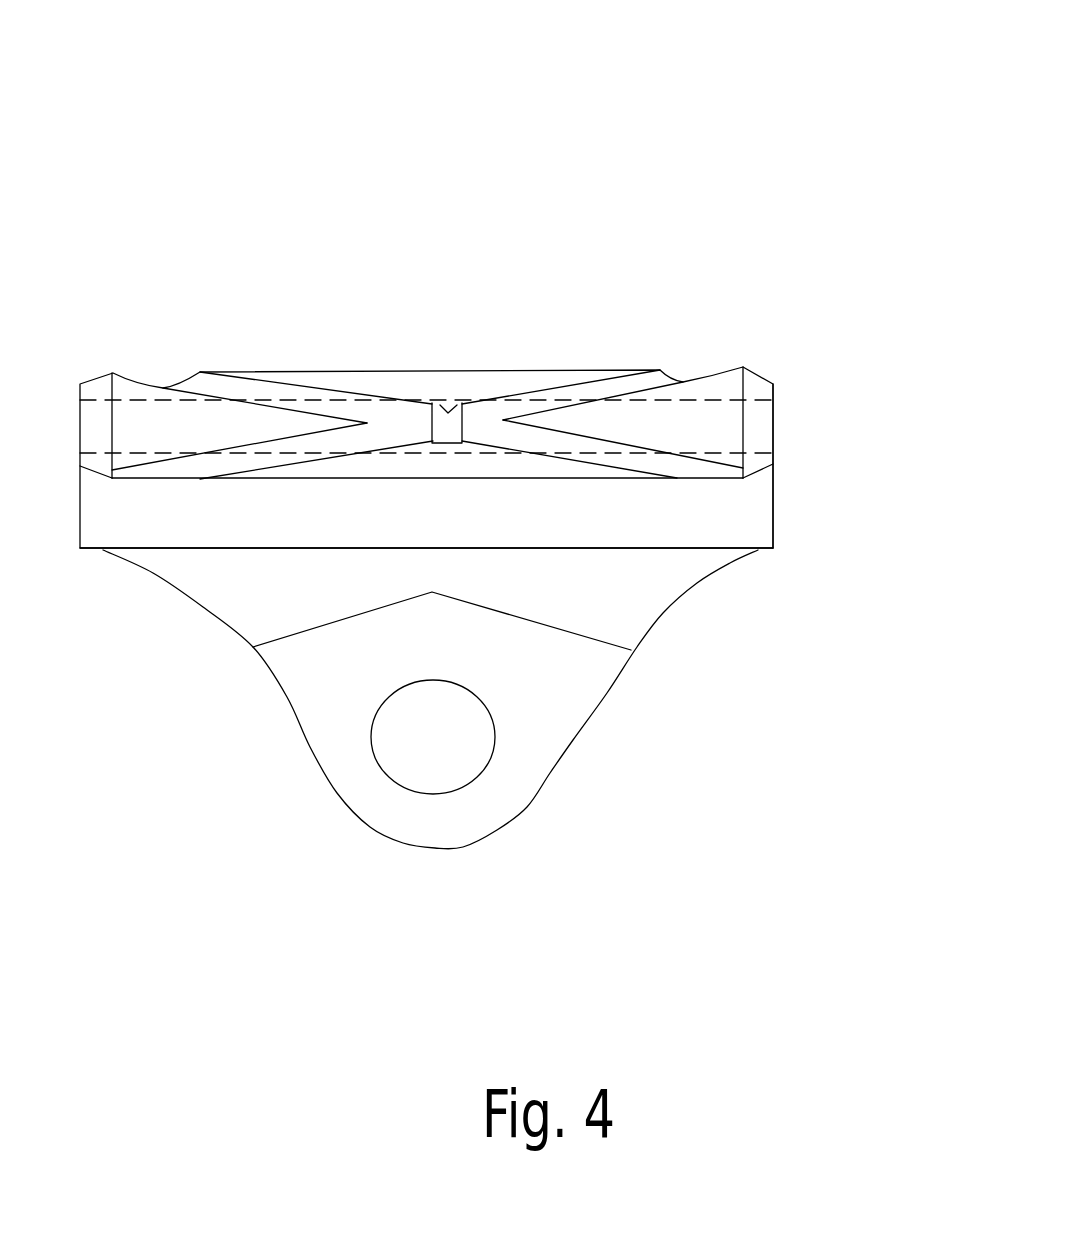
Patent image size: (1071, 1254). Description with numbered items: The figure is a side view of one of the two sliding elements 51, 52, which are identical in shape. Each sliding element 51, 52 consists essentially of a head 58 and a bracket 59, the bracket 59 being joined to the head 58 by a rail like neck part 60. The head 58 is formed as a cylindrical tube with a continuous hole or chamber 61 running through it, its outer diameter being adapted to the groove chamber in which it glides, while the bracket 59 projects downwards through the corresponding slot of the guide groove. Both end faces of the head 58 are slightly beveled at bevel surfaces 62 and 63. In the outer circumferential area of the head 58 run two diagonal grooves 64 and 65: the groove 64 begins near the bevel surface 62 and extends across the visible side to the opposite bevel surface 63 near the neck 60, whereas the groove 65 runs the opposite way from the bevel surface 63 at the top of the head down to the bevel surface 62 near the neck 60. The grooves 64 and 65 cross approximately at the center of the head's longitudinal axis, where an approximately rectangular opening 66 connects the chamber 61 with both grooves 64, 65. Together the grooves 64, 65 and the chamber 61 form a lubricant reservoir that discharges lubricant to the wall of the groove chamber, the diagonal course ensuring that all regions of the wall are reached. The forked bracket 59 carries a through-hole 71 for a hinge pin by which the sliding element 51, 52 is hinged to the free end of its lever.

The sliding element 51 is at (520, 145).
The sliding element 52 is at (426, 466).
The head 58 is at (575, 364).
The bracket 59 is at (572, 757).
The rail like neck part 60 is at (755, 520).
The continuous hole or chamber 61 is at (733, 408).
The bevel surface 62 is at (83, 383).
The bevel surface 63 is at (760, 433).
The groove 64 is at (252, 398).
The groove 65 is at (307, 448).
The opening 66 is at (460, 408).
The through-hole 71 is at (390, 777).